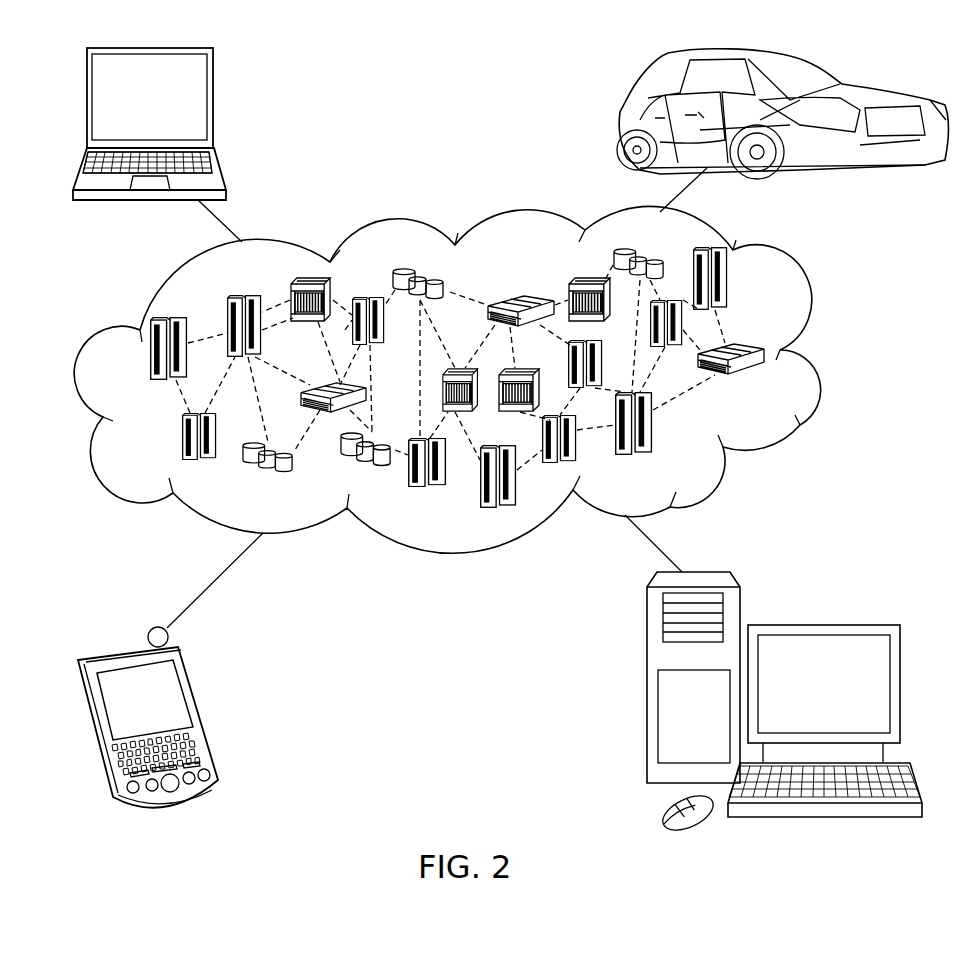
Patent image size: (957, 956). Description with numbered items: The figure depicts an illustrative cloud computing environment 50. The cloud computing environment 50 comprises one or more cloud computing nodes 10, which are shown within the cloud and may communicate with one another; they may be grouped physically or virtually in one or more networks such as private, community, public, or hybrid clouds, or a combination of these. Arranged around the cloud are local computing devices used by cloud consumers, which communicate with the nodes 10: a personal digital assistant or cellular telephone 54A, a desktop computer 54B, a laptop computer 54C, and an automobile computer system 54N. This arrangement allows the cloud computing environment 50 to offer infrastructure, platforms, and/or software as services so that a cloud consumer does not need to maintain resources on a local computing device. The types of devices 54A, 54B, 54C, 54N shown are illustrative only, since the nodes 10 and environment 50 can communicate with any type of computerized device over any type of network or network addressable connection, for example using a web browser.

The cloud computing node 10 is at (772, 385).
The cloud computing environment 50 is at (823, 357).
The personal digital assistant or cellular telephone 54A is at (207, 710).
The desktop computer 54B is at (822, 623).
The laptop computer 54C is at (213, 103).
The automobile computer system 54N is at (622, 118).